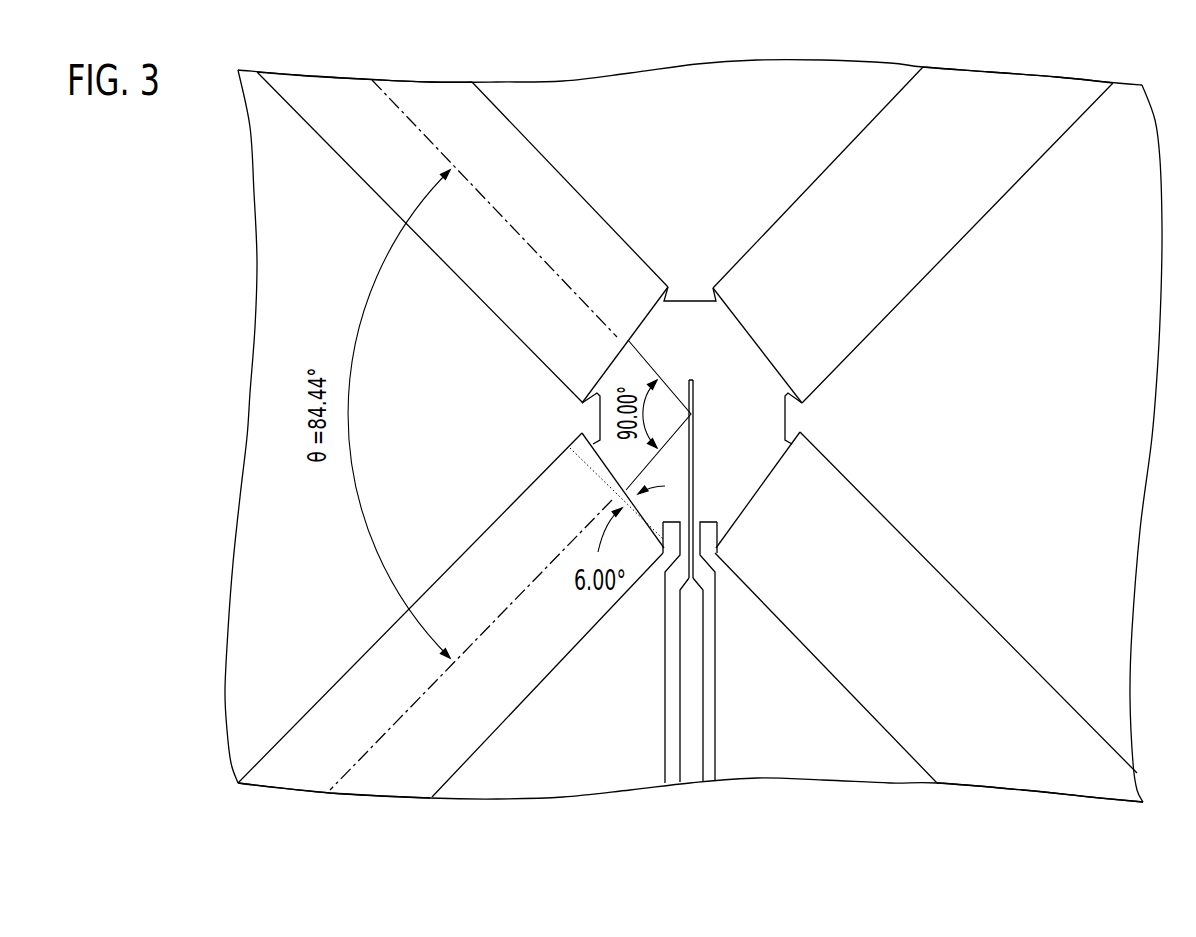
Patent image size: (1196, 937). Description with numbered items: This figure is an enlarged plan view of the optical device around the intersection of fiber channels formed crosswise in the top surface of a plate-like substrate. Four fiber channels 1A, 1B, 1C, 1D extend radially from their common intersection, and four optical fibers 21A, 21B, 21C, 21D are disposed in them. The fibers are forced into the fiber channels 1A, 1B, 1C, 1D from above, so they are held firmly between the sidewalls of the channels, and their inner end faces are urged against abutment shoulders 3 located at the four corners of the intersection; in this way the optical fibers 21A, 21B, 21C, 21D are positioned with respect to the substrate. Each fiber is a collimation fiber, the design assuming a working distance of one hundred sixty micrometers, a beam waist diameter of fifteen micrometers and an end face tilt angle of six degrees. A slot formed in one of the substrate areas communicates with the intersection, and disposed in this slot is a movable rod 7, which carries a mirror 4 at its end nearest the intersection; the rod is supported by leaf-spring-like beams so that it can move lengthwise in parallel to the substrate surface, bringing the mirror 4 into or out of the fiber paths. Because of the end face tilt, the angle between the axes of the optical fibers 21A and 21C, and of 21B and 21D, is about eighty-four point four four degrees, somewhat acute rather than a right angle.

The fiber channel 1A is at (342, 680).
The fiber channel 1B is at (1038, 678).
The fiber channel 1C is at (528, 140).
The fiber channel 1D is at (850, 143).
The optical fiber 21A is at (312, 755).
The optical fiber 21B is at (1021, 752).
The optical fiber 21C is at (327, 93).
The optical fiber 21D is at (993, 100).
The abutment shoulder 3 is at (692, 300).
The mirror 4 is at (694, 429).
The movable rod 7 is at (690, 740).